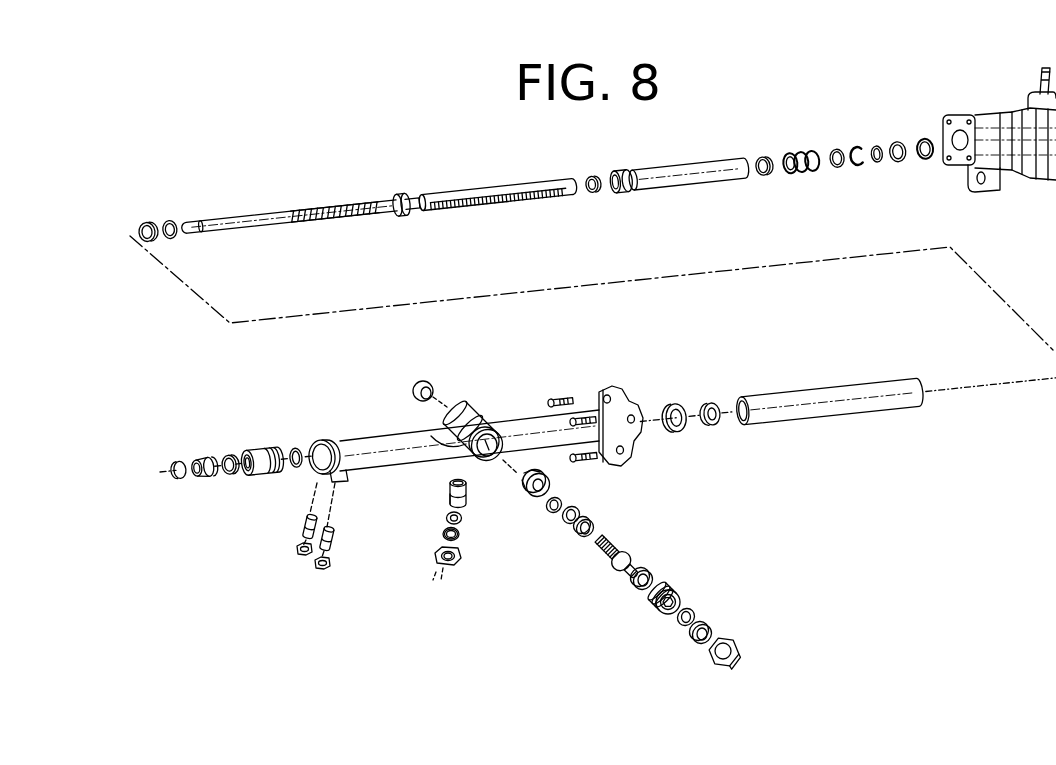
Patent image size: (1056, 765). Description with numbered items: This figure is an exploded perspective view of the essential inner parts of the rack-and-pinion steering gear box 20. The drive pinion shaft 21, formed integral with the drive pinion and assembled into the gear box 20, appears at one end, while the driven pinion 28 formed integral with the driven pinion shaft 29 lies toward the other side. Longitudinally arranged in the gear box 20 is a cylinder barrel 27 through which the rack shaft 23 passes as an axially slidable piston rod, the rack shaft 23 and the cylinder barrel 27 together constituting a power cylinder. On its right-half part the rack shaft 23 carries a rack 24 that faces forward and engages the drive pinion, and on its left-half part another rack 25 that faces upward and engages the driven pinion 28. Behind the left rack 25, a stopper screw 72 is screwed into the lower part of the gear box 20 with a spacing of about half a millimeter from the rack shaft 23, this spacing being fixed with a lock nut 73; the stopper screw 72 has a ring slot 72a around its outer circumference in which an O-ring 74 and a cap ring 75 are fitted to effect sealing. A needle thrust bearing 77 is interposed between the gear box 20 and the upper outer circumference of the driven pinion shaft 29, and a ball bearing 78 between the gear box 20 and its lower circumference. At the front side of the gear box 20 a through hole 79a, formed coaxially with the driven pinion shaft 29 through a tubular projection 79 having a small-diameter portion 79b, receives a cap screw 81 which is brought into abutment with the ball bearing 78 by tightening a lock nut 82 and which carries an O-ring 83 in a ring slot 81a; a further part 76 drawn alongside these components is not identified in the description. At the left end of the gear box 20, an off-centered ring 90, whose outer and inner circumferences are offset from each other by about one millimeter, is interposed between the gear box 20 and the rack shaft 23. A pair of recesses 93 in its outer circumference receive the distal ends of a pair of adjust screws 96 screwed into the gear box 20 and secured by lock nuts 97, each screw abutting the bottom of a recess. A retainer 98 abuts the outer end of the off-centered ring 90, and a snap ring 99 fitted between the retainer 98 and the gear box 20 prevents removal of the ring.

The steering gear box 20 is at (524, 375).
The drive pinion shaft 21 is at (1038, 78).
The rack shaft 23 is at (373, 215).
The rack 24 is at (525, 196).
The rack 25 is at (338, 204).
The cylinder barrel 27 is at (816, 390).
The driven pinion 28 is at (610, 570).
The driven pinion shaft 29 is at (603, 549).
The stopper screw 72 is at (457, 513).
The ring slot 72a is at (468, 498).
The lock nut 73 is at (442, 566).
The O-ring 74 is at (445, 518).
The cap ring 75 is at (442, 540).
The plug bolt 76 is at (552, 476).
The needle thrust bearing 77 is at (580, 508).
The ball bearing 78 is at (648, 572).
The tubular projection 79 is at (446, 437).
The through hole 79a is at (480, 453).
The small-diameter portion 79b is at (433, 437).
The cap screw 81 is at (667, 605).
The ring slot 81a is at (690, 583).
The lock nut 82 is at (738, 643).
The O-ring 83 is at (694, 611).
The off-centered ring 90 is at (252, 439).
The recesses 93 is at (265, 481).
The adjust screws 96 is at (303, 525).
The lock nuts 97 is at (300, 557).
The retainer 98 is at (201, 461).
The snap ring 99 is at (174, 463).